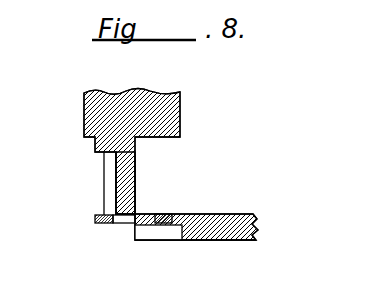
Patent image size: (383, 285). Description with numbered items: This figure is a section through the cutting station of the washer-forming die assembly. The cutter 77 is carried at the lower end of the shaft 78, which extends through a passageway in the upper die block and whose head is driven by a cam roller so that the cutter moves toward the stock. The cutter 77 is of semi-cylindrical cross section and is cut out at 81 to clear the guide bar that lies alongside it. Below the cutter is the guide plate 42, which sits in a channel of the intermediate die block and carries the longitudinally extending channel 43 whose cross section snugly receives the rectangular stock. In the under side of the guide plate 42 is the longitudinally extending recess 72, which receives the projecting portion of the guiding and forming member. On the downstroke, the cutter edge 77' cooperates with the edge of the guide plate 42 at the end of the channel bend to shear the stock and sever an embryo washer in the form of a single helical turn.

The shaft 78 is at (182, 113).
The cutter 77 is at (155, 183).
The cutter edge 77' is at (167, 200).
The cut out 81 is at (108, 178).
The channel 43 is at (210, 214).
The guide plate 42 is at (230, 214).
The recess 72 is at (161, 242).